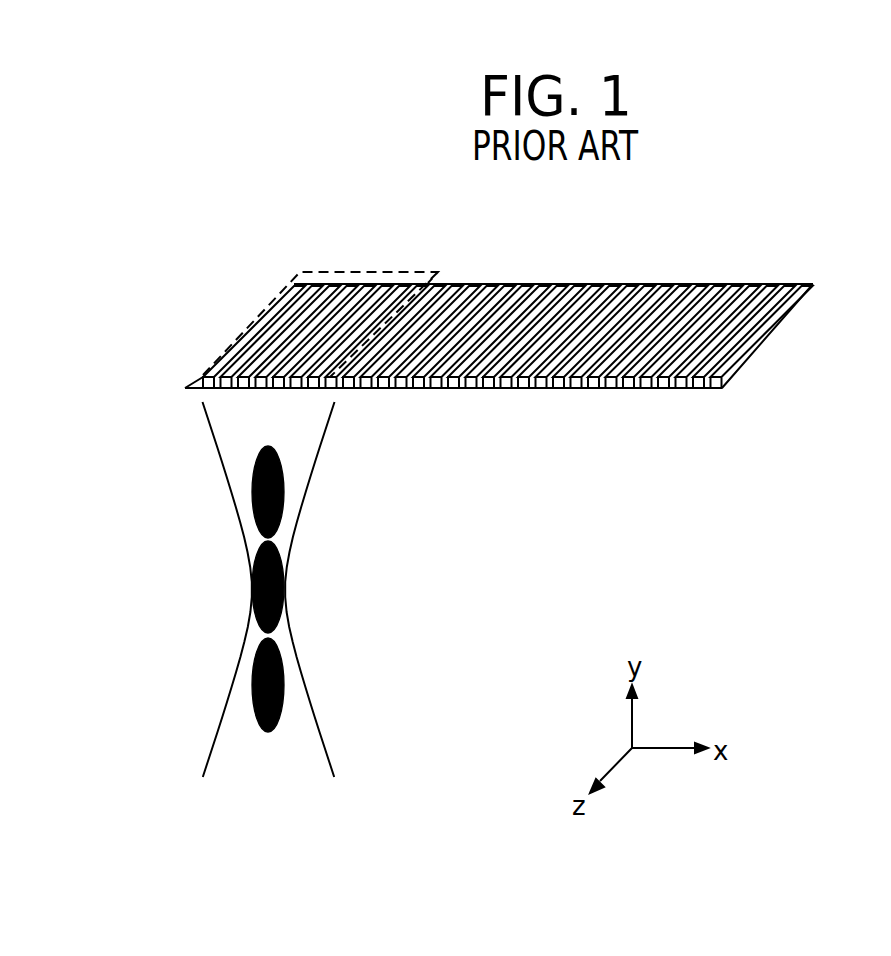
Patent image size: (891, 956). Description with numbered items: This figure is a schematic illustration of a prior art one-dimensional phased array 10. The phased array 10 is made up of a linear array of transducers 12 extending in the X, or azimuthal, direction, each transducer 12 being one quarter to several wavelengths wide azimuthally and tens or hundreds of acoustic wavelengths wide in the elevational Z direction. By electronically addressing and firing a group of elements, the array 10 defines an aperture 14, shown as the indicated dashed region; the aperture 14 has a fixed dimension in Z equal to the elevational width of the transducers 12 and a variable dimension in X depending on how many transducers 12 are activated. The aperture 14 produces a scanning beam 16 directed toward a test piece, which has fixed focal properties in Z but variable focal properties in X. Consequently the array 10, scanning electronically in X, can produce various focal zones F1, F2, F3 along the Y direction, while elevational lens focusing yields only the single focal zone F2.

The phased array 10 is at (499, 346).
The transducer 12 is at (605, 390).
The aperture 14 is at (333, 262).
The scanning beam 16 is at (308, 450).
The focal zone F1 is at (257, 466).
The focal zone F2 is at (257, 562).
The focal zone F3 is at (257, 665).